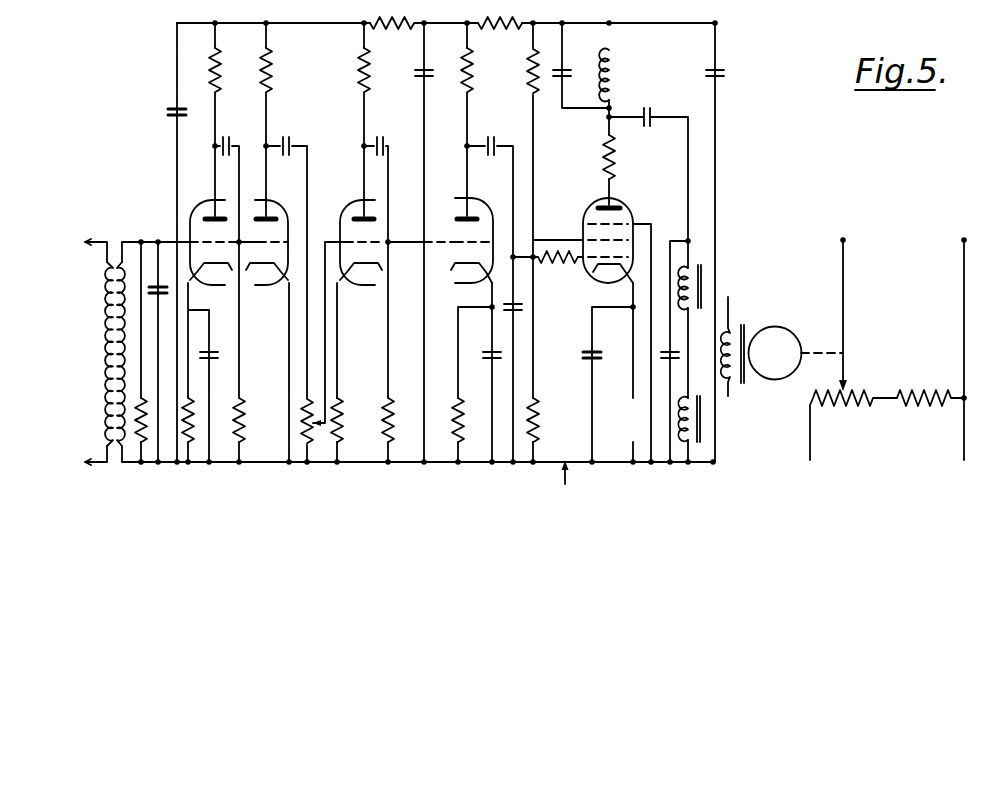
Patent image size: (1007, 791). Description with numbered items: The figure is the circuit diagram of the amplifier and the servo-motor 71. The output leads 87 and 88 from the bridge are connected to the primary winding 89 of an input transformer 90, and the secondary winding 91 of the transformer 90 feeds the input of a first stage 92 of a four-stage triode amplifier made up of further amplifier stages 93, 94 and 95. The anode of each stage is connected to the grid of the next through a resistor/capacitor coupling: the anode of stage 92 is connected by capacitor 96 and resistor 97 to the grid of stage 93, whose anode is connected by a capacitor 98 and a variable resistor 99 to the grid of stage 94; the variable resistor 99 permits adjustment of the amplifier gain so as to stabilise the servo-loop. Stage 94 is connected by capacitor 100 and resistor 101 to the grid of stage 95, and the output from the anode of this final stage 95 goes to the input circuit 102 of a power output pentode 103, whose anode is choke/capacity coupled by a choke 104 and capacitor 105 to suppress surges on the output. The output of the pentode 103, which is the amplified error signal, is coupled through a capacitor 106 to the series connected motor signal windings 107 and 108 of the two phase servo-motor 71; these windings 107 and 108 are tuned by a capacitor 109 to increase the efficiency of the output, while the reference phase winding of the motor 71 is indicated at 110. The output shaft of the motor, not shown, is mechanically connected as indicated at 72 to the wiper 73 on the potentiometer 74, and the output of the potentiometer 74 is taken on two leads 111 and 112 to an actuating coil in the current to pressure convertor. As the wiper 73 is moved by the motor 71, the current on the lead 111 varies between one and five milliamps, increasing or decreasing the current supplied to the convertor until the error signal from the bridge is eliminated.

The servo-motor 71 is at (780, 330).
The mechanical connection 72 is at (812, 353).
The wiper 73 is at (845, 365).
The potentiometer 74 is at (860, 405).
The output lead 87 is at (99, 240).
The output lead 88 is at (92, 466).
The primary winding 89 is at (100, 326).
The input transformer 90 is at (115, 251).
The secondary winding 91 is at (117, 363).
The first stage 92 is at (204, 203).
The amplifier stage 93 is at (277, 202).
The amplifier stage 94 is at (344, 210).
The amplifier stage 95 is at (455, 200).
The capacitor 96 is at (234, 145).
The resistor 97 is at (246, 423).
The capacitor 98 is at (283, 145).
The variable resistor 99 is at (300, 450).
The capacitor 100 is at (377, 142).
The resistor 101 is at (388, 416).
The input circuit 102 is at (569, 485).
The power output pentode 103 is at (630, 205).
The choke 104 is at (613, 96).
The capacitor 105 is at (563, 72).
The capacitor 106 is at (652, 118).
The motor signal winding 107 is at (687, 268).
The motor signal winding 108 is at (686, 432).
The capacitor 109 is at (681, 348).
The reference phase winding 110 is at (733, 326).
The lead 111 is at (846, 238).
The lead 112 is at (966, 237).